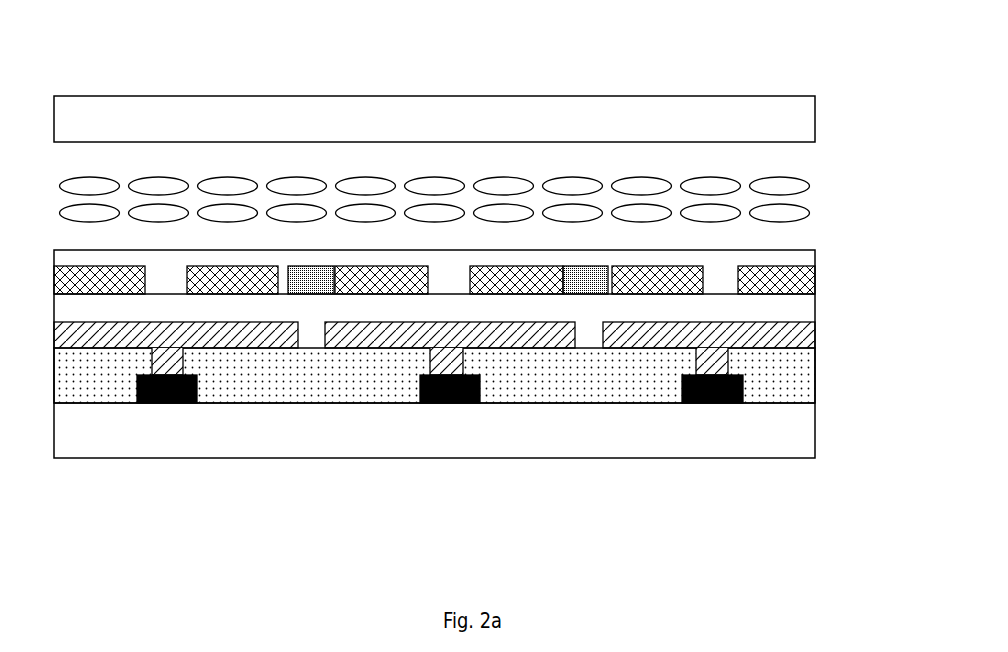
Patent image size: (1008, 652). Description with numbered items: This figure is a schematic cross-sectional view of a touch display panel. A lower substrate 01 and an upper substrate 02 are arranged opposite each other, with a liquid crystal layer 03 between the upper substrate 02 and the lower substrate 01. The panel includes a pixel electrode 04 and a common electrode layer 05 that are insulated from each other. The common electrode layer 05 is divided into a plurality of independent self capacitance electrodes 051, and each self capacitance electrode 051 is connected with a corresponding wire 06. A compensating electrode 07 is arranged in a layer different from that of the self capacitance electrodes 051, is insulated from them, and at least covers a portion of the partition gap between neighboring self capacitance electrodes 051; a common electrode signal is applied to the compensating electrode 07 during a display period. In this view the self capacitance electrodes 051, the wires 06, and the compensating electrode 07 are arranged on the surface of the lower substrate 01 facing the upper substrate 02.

The lower substrate 01 is at (178, 433).
The upper substrate 02 is at (573, 113).
The liquid crystal layer 03 is at (785, 191).
The pixel electrode 04 is at (815, 278).
The common electrode layer 05 is at (434, 447).
The self capacitance electrode 051 is at (602, 527).
The wire 06 is at (715, 403).
The compensating electrode 07 is at (577, 274).